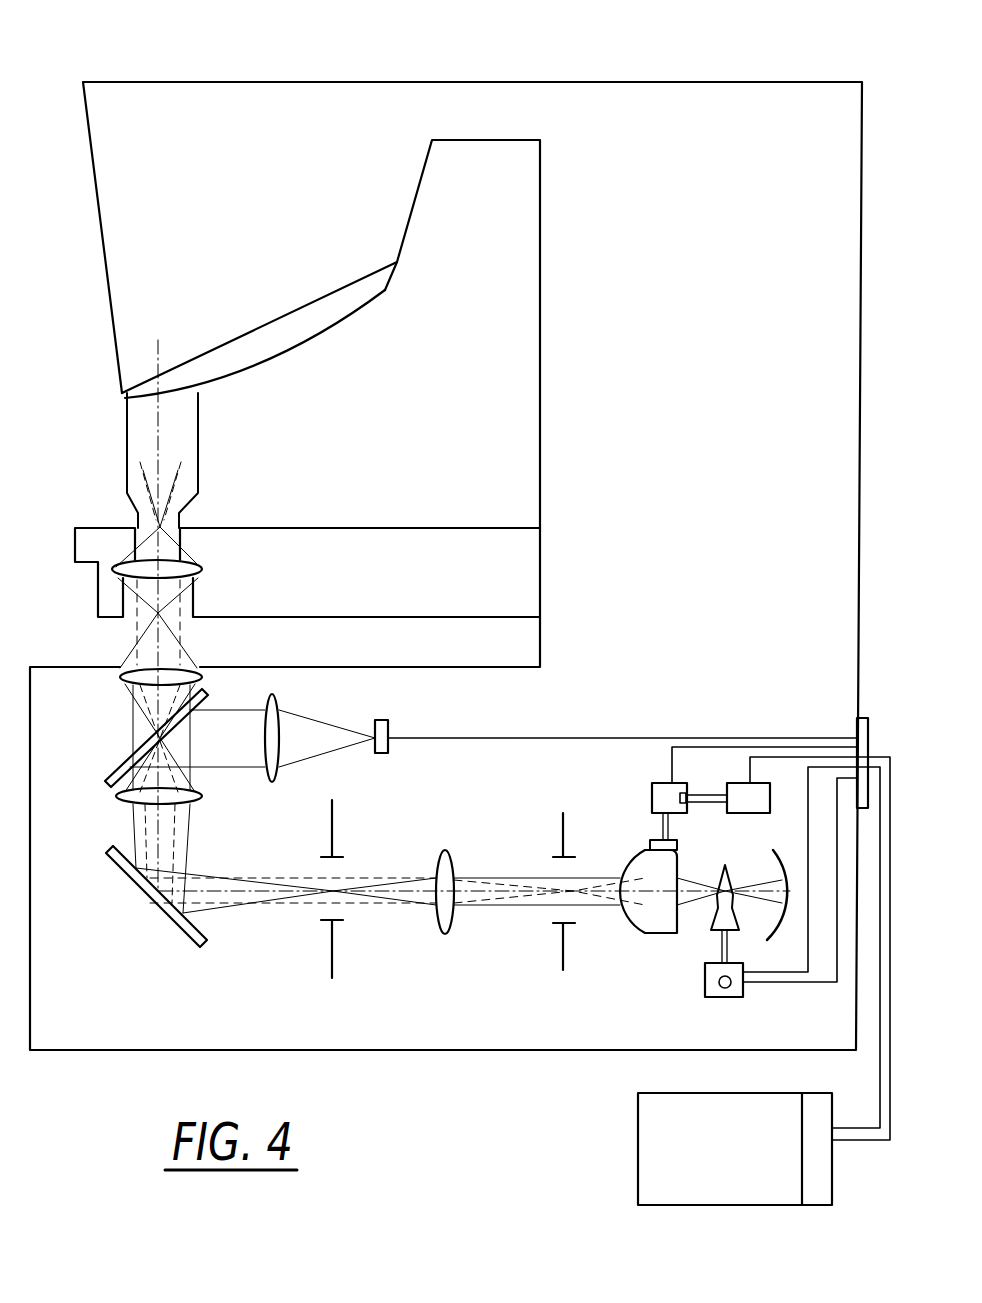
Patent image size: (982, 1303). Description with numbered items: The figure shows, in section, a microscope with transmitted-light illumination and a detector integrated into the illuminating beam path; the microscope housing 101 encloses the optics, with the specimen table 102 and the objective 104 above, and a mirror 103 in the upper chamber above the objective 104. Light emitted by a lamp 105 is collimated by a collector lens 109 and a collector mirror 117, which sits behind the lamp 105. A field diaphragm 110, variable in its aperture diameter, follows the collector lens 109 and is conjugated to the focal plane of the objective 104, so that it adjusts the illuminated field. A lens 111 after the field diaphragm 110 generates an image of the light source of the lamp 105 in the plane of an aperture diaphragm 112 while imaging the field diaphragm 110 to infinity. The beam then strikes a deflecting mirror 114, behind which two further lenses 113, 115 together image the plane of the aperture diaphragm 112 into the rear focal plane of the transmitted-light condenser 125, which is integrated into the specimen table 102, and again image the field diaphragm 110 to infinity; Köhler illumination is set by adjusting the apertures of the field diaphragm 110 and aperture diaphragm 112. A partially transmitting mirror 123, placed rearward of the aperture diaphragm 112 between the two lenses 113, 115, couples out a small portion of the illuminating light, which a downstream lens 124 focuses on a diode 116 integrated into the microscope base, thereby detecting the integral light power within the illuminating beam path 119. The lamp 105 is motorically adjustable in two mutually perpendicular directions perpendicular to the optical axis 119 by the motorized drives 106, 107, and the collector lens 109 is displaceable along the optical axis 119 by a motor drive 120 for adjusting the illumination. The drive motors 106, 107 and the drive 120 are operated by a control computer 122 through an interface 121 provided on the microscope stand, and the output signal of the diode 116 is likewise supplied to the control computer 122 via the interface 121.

The housing 101 is at (713, 93).
The specimen table 102 is at (455, 538).
The concave mirror 103 is at (373, 288).
The objective 104 is at (198, 445).
The lamp 105 is at (717, 918).
The motorized drive 106 is at (718, 1000).
The motorized drive 107 is at (731, 988).
The collector lens 109 is at (648, 923).
The field diaphragm 110 is at (563, 822).
The lens 111 is at (447, 848).
The aperture diaphragm 112 is at (333, 810).
The lens 113 is at (117, 802).
The deflecting mirror 114 is at (187, 943).
The lens 115 is at (118, 687).
The diode 116 is at (390, 727).
The collector mirror 117 is at (773, 850).
The optical axis 119 is at (475, 893).
The motor drive 120 is at (770, 790).
The interface 121 is at (857, 728).
The control computer 122 is at (636, 1147).
The partially transmitting mirror 123 is at (103, 788).
The lens 124 is at (272, 782).
The transmitted-light condenser 125 is at (202, 569).